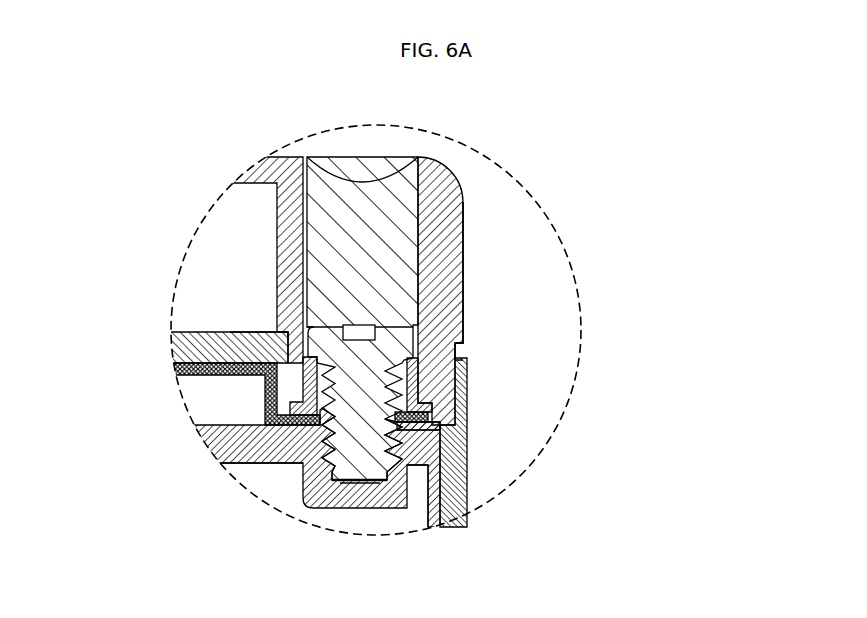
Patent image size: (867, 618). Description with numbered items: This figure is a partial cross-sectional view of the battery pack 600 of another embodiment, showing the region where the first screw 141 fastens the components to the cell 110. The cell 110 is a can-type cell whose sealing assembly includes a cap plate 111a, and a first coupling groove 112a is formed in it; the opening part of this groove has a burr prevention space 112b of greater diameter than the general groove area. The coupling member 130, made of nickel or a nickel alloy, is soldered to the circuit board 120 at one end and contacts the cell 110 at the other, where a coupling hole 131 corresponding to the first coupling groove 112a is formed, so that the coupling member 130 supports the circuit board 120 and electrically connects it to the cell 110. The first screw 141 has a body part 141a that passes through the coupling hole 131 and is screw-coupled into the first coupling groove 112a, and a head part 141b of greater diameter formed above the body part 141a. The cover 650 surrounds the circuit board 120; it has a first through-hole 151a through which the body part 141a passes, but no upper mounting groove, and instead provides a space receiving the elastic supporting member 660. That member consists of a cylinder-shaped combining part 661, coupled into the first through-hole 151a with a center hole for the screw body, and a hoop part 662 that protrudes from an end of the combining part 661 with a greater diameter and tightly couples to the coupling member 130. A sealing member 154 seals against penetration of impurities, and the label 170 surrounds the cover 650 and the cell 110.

The battery pack 600 is at (468, 146).
The cover 650 is at (489, 291).
The sealing member 154 is at (368, 205).
The first screw 141 is at (698, 318).
The body part 141a is at (458, 358).
The head part 141b is at (463, 327).
The circuit board 120 is at (163, 318).
The first through-hole 151a is at (278, 342).
The coupling member 130 is at (279, 467).
The coupling hole 131 is at (262, 464).
The cell 110 is at (493, 478).
The cap plate 111a is at (340, 500).
The first coupling groove 112a is at (367, 478).
The burr prevention space 112b is at (468, 503).
The elastic supporting member 660 is at (457, 393).
The combining part 661 is at (418, 378).
The hoop part 662 is at (418, 400).
The label 170 is at (400, 425).